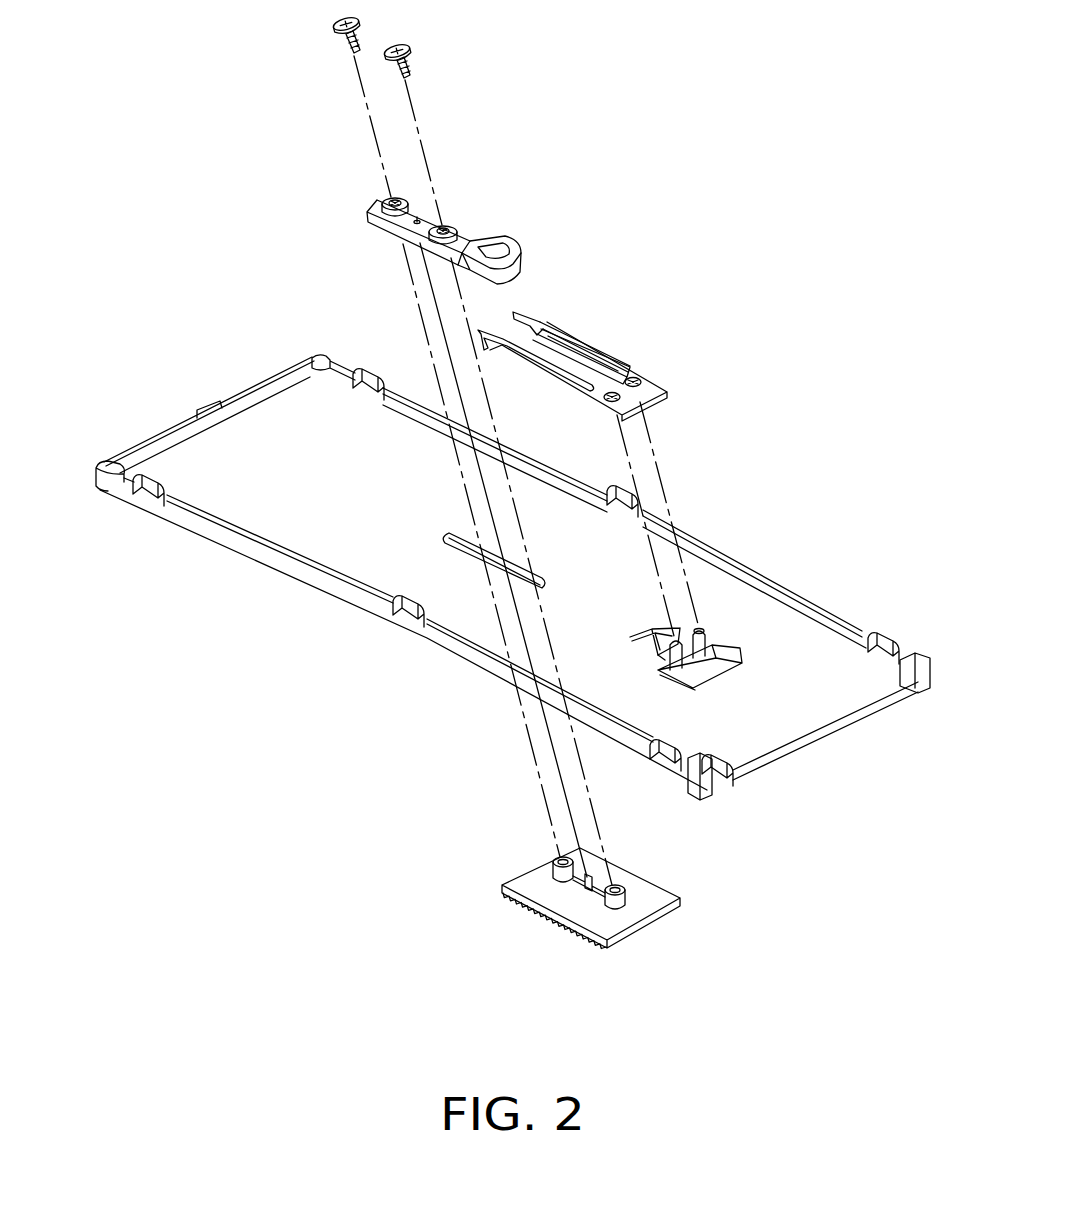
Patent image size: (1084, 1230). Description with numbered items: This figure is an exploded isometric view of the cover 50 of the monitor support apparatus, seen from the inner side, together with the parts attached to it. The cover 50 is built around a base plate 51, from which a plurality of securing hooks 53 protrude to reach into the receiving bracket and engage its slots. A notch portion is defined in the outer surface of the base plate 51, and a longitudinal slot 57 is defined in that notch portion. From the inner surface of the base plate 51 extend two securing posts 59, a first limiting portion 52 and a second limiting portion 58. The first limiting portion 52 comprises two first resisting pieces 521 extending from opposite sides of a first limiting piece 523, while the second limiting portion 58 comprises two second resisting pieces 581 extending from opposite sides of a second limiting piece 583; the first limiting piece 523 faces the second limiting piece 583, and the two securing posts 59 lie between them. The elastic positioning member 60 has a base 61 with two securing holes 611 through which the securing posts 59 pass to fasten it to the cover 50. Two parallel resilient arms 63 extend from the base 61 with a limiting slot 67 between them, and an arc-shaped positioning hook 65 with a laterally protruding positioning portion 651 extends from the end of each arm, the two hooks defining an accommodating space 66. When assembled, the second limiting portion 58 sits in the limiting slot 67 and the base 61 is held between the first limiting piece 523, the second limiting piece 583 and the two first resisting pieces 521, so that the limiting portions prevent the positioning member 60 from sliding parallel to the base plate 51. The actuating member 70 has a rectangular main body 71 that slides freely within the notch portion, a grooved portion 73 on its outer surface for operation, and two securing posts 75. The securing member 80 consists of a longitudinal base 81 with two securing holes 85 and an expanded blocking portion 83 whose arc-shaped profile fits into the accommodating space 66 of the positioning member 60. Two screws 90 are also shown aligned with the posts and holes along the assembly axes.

The cover 50 is at (513, 598).
The base plate 51 is at (783, 650).
The first limiting portion 52 is at (771, 736).
The first resisting pieces 521 is at (680, 667).
The first limiting piece 523 is at (723, 664).
The securing hooks 53 is at (620, 483).
The longitudinal slot 57 is at (442, 536).
The second limiting portion 58 is at (541, 706).
The second resisting pieces 581 is at (647, 643).
The second limiting piece 583 is at (653, 651).
The securing posts 59 is at (700, 630).
The elastic positioning member 60 is at (611, 391).
The base 61 is at (617, 380).
The securing holes 611 is at (642, 378).
The resilient arms 63 is at (608, 352).
The positioning hooks 65 is at (580, 316).
The positioning portion 651 is at (537, 313).
The accommodating space 66 is at (498, 352).
The limiting slot 67 is at (551, 352).
The actuating member 70 is at (556, 901).
The main body 71 is at (648, 900).
The grooved portion 73 is at (548, 918).
The securing posts 75 is at (560, 868).
The securing member 80 is at (457, 225).
The longitudinal base 81 is at (372, 218).
The blocking portion 83 is at (510, 252).
The securing holes 85 is at (388, 200).
The screws 90 is at (398, 44).